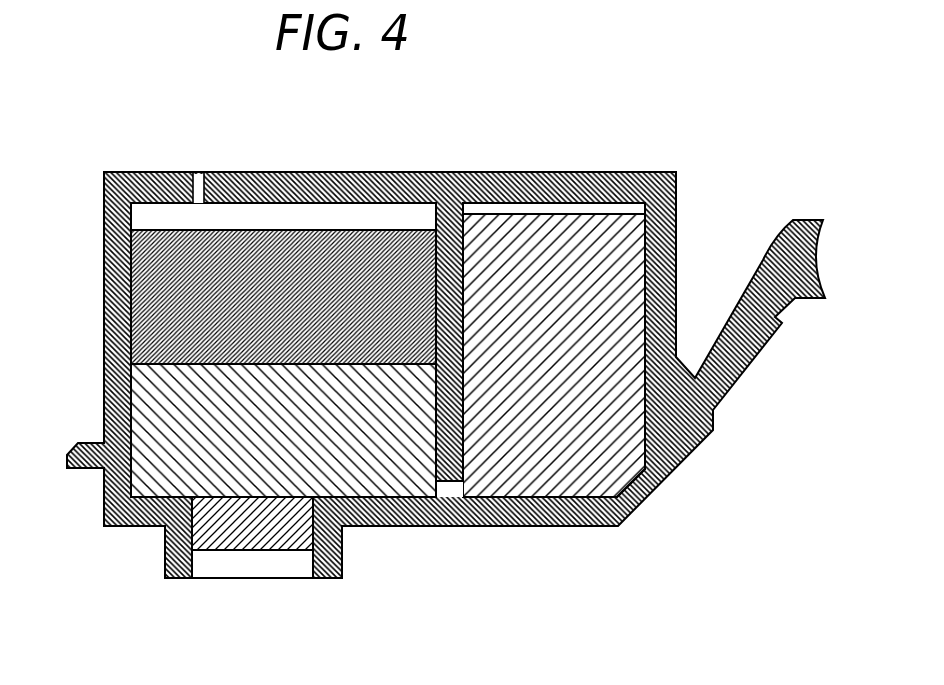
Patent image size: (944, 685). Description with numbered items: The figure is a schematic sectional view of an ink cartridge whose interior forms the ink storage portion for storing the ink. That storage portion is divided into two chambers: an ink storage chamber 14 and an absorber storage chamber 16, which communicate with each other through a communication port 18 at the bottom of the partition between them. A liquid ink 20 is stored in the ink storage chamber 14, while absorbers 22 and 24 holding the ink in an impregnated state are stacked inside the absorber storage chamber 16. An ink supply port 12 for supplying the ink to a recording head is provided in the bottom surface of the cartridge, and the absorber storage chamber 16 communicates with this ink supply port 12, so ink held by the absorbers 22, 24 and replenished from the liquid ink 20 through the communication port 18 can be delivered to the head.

The ink supply port 12 is at (257, 567).
The ink storage chamber 14 is at (607, 207).
The absorber storage chamber 16 is at (265, 220).
The communication port 18 is at (460, 500).
The liquid ink 20 is at (583, 462).
The absorber 22 is at (153, 405).
The absorber 24 is at (187, 298).